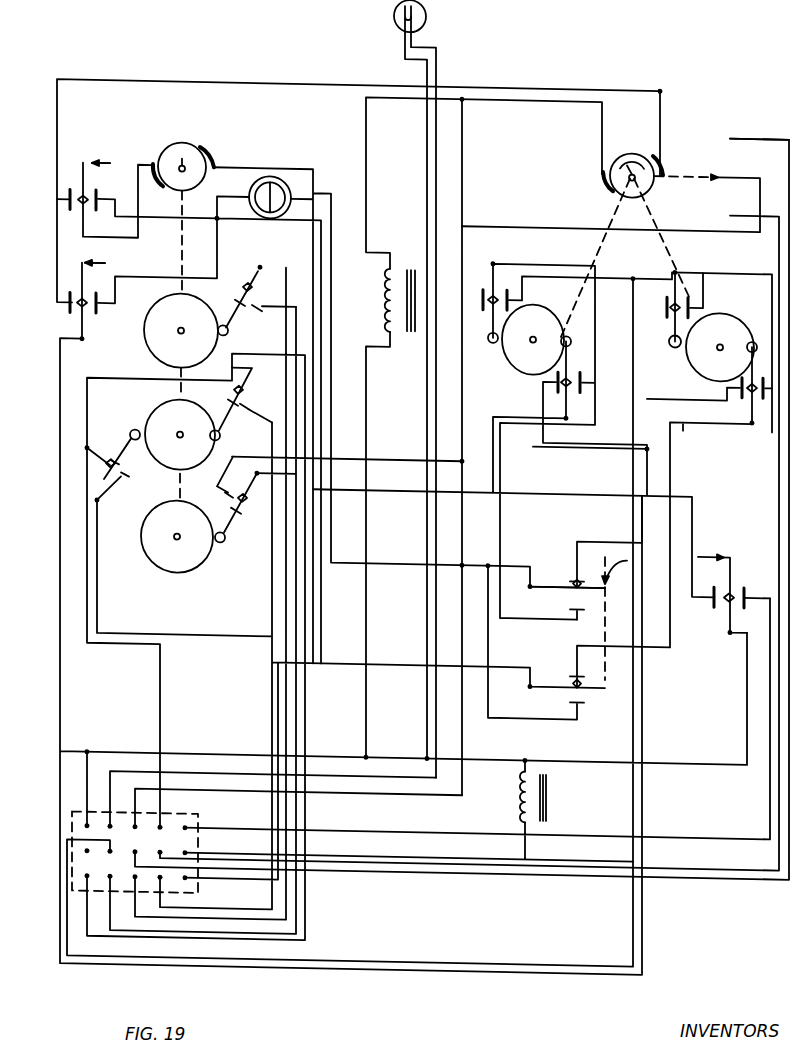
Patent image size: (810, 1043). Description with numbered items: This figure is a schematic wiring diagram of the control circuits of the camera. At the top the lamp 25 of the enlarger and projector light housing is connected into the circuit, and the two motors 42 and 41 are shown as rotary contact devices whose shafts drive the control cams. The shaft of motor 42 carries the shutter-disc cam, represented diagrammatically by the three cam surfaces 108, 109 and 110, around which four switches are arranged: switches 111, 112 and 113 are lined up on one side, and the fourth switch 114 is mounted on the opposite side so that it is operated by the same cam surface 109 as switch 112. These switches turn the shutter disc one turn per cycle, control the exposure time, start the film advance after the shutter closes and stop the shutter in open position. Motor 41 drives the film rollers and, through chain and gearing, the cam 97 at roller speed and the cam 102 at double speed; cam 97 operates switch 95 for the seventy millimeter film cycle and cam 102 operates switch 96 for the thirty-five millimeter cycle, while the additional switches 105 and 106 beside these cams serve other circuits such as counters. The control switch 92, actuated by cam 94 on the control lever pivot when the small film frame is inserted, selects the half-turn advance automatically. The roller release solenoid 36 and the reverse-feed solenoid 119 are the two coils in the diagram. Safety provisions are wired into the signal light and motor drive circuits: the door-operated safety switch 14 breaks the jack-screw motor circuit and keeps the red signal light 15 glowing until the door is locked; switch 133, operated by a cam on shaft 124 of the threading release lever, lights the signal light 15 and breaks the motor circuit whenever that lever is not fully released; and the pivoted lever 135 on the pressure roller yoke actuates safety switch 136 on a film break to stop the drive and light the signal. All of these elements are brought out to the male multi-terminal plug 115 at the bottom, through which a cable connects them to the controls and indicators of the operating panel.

The lamp 25 is at (394, 9).
The motor 42 is at (180, 142).
The signal light 15 is at (250, 187).
The pivoted lever 135 is at (93, 160).
The safety switch 136 is at (83, 221).
The shaft 124 is at (94, 260).
The switch 133 is at (82, 326).
The cam surface 108 is at (144, 337).
The cam surface 109 is at (156, 410).
The cam surface 110 is at (156, 566).
The switch 111 is at (237, 303).
The switch 112 is at (241, 391).
The switch 114 is at (116, 478).
The switch 113 is at (226, 524).
The roller release solenoid 36 is at (385, 292).
The motor 41 is at (646, 146).
The cam 102 is at (550, 312).
The switch 106 is at (484, 334).
The switch 96 is at (541, 373).
The cam 97 is at (724, 302).
The switch 105 is at (665, 335).
The switch 95 is at (733, 373).
The safety switch 14 is at (734, 572).
The cam 94 is at (603, 580).
The control switch 92 is at (571, 651).
The male multi-terminal plug 115 is at (74, 828).
The solenoid 119 is at (520, 783).